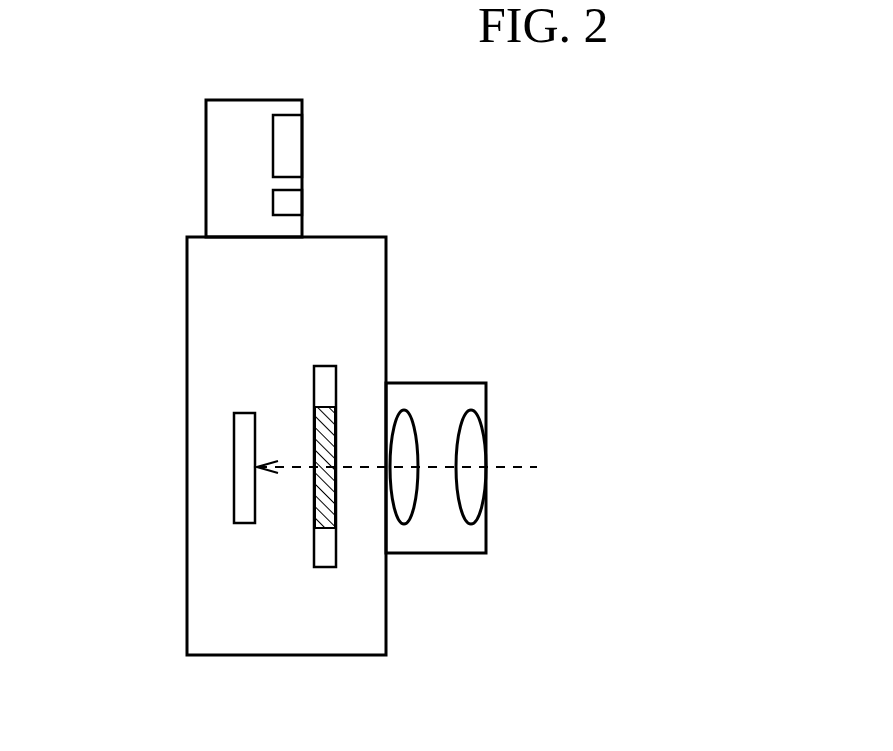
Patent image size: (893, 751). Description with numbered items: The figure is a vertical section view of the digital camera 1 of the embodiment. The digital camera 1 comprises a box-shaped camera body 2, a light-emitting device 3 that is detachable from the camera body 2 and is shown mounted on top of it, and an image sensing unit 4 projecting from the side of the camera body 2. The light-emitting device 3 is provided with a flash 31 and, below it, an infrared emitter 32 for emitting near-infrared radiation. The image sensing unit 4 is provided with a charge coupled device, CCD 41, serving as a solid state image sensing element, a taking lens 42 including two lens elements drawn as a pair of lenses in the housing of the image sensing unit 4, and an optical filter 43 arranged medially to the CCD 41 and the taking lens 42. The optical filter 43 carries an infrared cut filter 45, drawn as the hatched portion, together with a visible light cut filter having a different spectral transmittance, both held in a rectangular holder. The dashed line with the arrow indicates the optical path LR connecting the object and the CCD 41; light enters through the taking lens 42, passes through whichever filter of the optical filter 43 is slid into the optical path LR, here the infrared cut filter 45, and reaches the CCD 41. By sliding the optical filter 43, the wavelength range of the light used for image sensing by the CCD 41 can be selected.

The digital camera 1 is at (90, 89).
The camera body 2 is at (177, 280).
The light-emitting device 3 is at (177, 168).
The image sensing unit 4 is at (463, 365).
The flash 31 is at (302, 145).
The infrared emitter 32 is at (302, 204).
The charge coupled device (CCD) 41 is at (242, 412).
The taking lens 42 is at (402, 522).
The optical filter 43 is at (323, 365).
The infrared cut filter 45 is at (320, 512).
The optical path LR is at (535, 470).